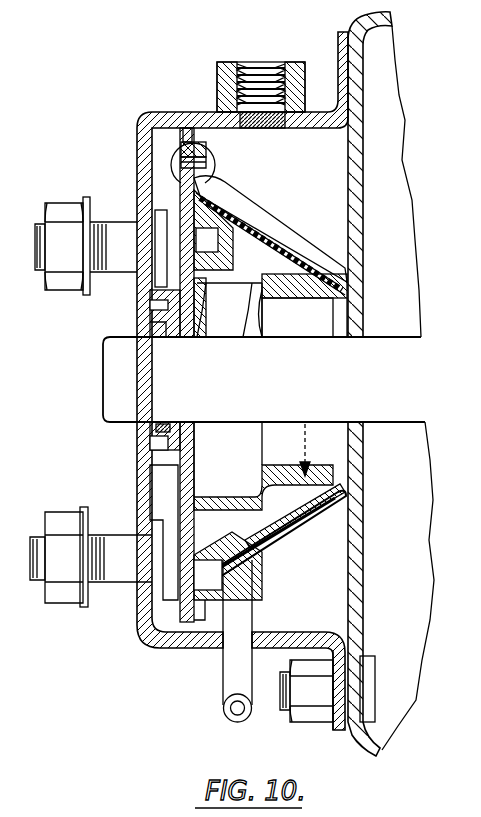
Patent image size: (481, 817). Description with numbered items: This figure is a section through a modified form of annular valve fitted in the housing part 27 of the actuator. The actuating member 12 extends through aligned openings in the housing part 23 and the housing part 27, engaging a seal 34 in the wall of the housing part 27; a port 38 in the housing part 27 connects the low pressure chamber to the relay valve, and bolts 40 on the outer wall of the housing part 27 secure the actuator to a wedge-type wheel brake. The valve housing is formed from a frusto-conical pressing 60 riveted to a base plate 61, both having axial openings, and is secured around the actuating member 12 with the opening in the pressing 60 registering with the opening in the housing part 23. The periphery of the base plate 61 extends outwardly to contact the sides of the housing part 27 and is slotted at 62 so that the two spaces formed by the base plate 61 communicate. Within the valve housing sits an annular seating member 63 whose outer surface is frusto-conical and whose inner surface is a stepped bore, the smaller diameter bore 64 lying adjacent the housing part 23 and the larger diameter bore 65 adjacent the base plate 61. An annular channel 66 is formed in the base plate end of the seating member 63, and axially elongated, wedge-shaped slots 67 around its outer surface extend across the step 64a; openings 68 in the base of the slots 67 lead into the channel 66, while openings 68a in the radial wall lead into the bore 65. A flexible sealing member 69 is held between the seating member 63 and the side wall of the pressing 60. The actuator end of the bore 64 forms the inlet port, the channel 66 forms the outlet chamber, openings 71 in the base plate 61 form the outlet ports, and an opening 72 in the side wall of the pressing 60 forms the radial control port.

The actuating member 12 is at (120, 398).
The housing part 23 is at (368, 120).
The housing part 27 is at (188, 632).
The seal 34 is at (158, 430).
The port 38 is at (226, 80).
The bolts 40 is at (36, 250).
The frusto-conical pressing 60 is at (262, 222).
The base plate 61 is at (184, 186).
The slot 62 is at (190, 138).
The annular seating member 63 is at (308, 433).
The smaller diameter bore 64 is at (304, 305).
The step 64a is at (262, 300).
The larger diameter bore 65 is at (206, 300).
The annular channel 66 is at (206, 244).
The slots 67 is at (297, 502).
The openings 68 is at (266, 540).
The openings 68a is at (240, 300).
The flexible sealing member 69 is at (300, 256).
The openings 71 is at (172, 548).
The opening 72 is at (266, 558).